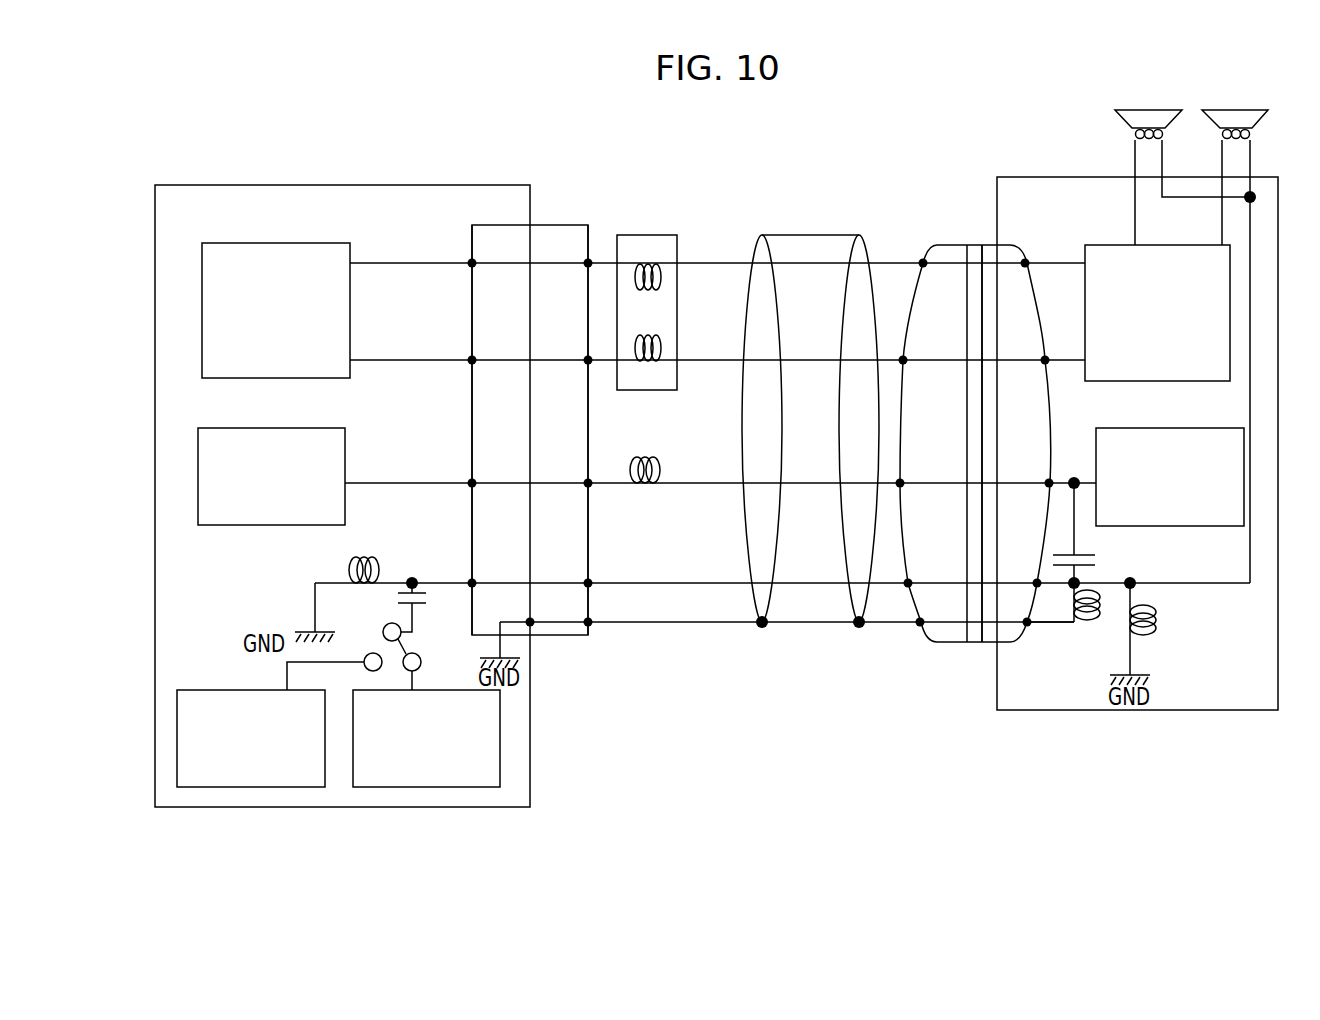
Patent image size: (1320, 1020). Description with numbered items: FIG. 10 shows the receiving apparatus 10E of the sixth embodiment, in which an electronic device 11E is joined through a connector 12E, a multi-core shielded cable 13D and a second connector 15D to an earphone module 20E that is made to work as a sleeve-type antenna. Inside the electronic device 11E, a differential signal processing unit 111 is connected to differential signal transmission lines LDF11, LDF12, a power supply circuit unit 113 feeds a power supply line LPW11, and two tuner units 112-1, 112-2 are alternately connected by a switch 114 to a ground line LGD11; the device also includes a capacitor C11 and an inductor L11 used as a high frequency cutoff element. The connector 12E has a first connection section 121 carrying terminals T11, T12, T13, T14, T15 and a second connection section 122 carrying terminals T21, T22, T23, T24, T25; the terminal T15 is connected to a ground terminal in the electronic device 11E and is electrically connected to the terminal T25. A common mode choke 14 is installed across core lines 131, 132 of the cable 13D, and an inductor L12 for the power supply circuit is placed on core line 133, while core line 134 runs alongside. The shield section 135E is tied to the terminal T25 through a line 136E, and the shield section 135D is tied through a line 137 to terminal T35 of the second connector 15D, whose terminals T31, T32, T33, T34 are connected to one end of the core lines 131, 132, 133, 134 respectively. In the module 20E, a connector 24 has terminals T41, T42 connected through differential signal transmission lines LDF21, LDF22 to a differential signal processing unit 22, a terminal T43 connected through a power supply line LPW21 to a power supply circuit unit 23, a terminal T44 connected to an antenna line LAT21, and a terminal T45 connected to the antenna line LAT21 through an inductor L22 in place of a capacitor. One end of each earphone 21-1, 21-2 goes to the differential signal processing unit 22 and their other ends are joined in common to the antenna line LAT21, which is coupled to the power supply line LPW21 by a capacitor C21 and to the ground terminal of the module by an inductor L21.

The receiving apparatus 10E is at (891, 792).
The electronic device 11E is at (530, 728).
The connector 12E is at (560, 222).
The first connection section 121 is at (490, 225).
The second connection section 122 is at (586, 225).
The differential signal processing unit 111 is at (335, 243).
The power supply circuit unit 113 is at (290, 525).
The tuner unit 112-1 is at (250, 807).
The tuner unit 112-2 is at (425, 807).
The switch 114 is at (414, 642).
The common mode choke 14 is at (650, 235).
The multi-core shielded cable 13D is at (805, 630).
The core line 131 is at (808, 266).
The core line 132 is at (808, 363).
The core line 133 is at (808, 481).
The core line 134 is at (808, 581).
The shield section 135E is at (762, 628).
The shield section 135D is at (859, 628).
The line 136E is at (670, 626).
The line 137 is at (902, 626).
The second connector 15D is at (945, 245).
The connector 24 is at (1010, 245).
The module 20E is at (1150, 714).
The differential signal processing unit 22 is at (1150, 245).
The power supply circuit unit 23 is at (1150, 428).
The earphone 21-1 is at (1150, 110).
The earphone 21-2 is at (1237, 110).
The terminal T11 is at (472, 263).
The terminal T12 is at (472, 360).
The terminal T13 is at (472, 483).
The terminal T14 is at (472, 583).
The terminal T15 is at (530, 622).
The terminal T21 is at (588, 263).
The terminal T22 is at (588, 360).
The terminal T23 is at (588, 483).
The terminal T24 is at (588, 583).
The terminal T25 is at (588, 622).
The terminal T31 is at (923, 263).
The terminal T32 is at (903, 360).
The terminal T33 is at (900, 483).
The terminal T34 is at (908, 583).
The terminal T35 is at (920, 622).
The terminal T41 is at (1025, 263).
The terminal T42 is at (1045, 360).
The terminal T43 is at (1049, 483).
The terminal T44 is at (1037, 583).
The terminal T45 is at (1027, 622).
The differential signal transmission line LDF11 is at (412, 264).
The differential signal transmission line LDF12 is at (412, 360).
The power supply line LPW11 is at (412, 483).
The ground line LGD11 is at (440, 583).
The inductor L11 is at (367, 558).
The inductor L12 is at (645, 455).
The capacitor C11 is at (398, 599).
The differential signal transmission line LDF21 is at (1073, 262).
The differential signal transmission line LDF22 is at (1065, 360).
The power supply line LPW21 is at (1073, 480).
The antenna line LAT21 is at (1215, 583).
The capacitor C21 is at (1095, 558).
The inductor L21 is at (1157, 618).
The inductor L22 is at (1084, 630).